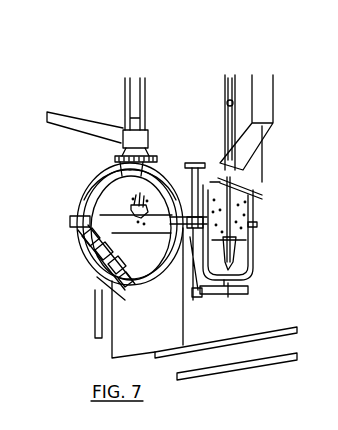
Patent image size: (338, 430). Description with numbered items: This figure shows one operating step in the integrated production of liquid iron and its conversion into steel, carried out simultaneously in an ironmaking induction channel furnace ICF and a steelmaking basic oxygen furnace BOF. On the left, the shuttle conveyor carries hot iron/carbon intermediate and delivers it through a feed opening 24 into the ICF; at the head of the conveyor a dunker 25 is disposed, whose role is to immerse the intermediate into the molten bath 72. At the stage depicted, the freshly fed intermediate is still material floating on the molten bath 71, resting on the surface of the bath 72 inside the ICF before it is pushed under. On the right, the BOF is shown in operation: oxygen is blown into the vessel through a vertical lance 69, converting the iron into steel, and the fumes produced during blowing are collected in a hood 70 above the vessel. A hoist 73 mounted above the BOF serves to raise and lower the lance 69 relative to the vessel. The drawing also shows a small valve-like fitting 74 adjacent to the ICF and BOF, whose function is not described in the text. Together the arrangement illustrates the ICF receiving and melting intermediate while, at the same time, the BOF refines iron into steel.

The dunker 25 is at (146, 86).
The feed opening 24 is at (113, 149).
The bath 72 is at (165, 268).
The material floating on the molten bath 71 is at (88, 218).
The induction channel furnace ICF is at (142, 283).
The valve 74 is at (213, 160).
The hoist 73 is at (234, 103).
The hood 70 is at (265, 148).
The basic oxygen furnace BOF is at (254, 257).
The vertical lance 69 is at (257, 225).